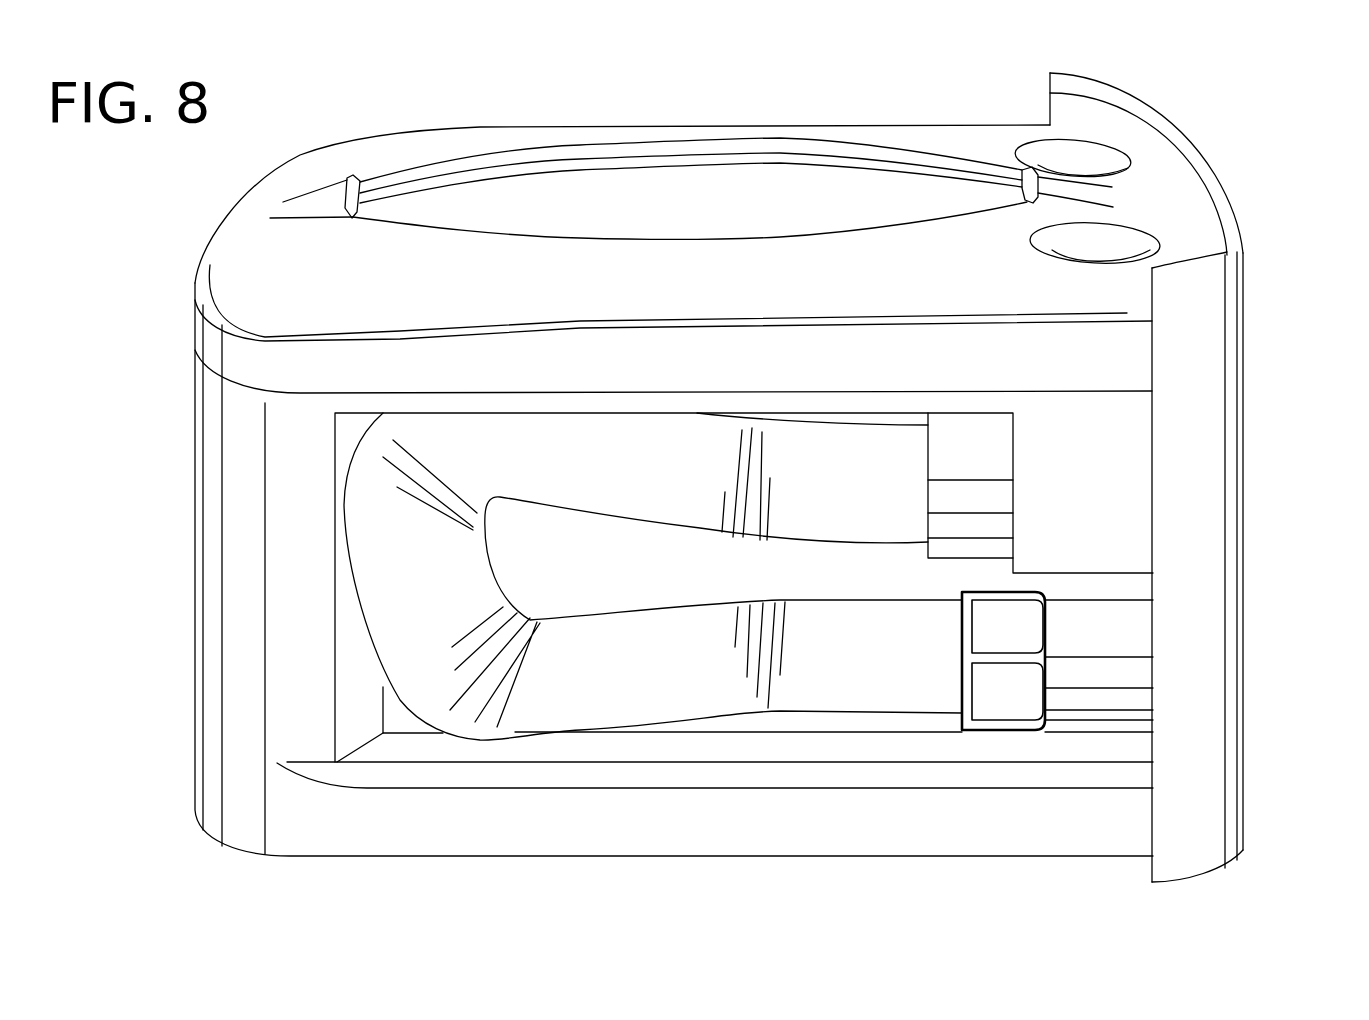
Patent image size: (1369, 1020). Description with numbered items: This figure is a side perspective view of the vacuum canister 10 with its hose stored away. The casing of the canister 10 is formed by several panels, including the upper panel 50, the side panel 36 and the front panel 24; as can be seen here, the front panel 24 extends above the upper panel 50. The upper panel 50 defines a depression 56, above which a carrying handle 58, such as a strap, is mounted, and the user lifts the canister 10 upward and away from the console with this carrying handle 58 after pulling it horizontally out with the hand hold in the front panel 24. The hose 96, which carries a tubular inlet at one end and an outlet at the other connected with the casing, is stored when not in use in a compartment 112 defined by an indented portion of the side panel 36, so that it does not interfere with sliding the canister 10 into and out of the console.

The canister 10 is at (931, 98).
The front panel 24 is at (1217, 365).
The side panel 36 is at (258, 588).
The upper panel 50 is at (863, 125).
The depression 56 is at (548, 217).
The carrying handle 58 is at (725, 150).
The hose 96 is at (637, 685).
The compartment 112 is at (826, 722).